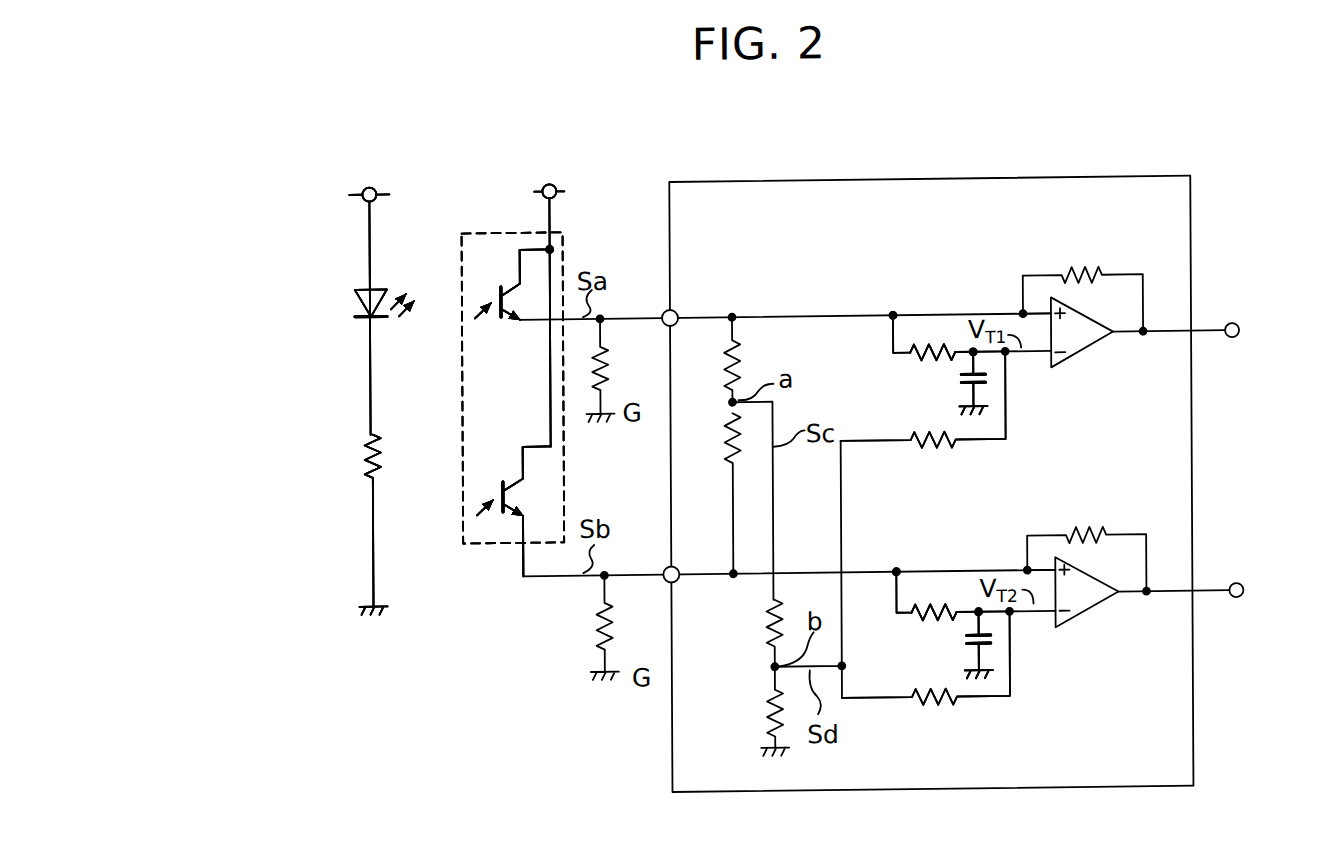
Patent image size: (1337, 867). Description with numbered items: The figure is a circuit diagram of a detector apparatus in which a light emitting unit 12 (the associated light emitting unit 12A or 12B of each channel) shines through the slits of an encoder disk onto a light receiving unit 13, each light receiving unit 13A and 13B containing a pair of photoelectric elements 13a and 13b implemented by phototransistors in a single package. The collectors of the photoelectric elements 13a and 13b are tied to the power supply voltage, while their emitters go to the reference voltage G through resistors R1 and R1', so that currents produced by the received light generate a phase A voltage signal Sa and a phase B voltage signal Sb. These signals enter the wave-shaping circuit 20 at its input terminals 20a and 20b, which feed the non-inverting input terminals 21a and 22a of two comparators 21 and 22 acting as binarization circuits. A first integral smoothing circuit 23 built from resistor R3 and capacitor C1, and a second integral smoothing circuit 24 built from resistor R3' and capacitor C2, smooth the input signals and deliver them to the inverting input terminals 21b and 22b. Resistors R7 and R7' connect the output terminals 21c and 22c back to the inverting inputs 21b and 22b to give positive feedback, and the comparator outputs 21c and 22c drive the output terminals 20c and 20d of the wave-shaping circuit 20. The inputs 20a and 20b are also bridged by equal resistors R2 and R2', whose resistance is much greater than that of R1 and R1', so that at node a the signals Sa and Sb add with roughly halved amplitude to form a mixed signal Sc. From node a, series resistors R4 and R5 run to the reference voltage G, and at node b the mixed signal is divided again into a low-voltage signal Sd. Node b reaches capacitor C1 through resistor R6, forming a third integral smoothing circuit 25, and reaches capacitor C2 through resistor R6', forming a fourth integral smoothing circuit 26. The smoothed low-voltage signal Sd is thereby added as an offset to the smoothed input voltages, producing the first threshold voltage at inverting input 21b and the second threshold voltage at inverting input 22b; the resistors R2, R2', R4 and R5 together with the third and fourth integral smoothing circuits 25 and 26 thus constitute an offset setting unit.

The light emitting unit 12 is at (347, 284).
The light emitting unit 12A is at (293, 392).
The light emitting unit 12B is at (293, 392).
The light receiving unit 13 is at (477, 229).
The light receiving unit 13A is at (508, 351).
The light receiving unit 13B is at (508, 351).
The photoelectric element 13a is at (486, 324).
The photoelectric element 13b is at (486, 479).
The wave-shaping circuit 20 is at (1089, 180).
The input terminal 20a is at (665, 310).
The input terminal 20b is at (666, 568).
The output terminal 20c is at (1240, 336).
The output terminal 20d is at (1243, 597).
The comparator 21 is at (1094, 358).
The non-inverting input terminal 21a is at (1037, 304).
The inverting input terminal 21b is at (1038, 362).
The output terminal 21c is at (1127, 333).
The comparator 22 is at (1096, 619).
The non-inverting input terminal 22a is at (1042, 572).
The inverting input terminal 22b is at (1040, 620).
The output terminal 22c is at (1134, 594).
The first integral smoothing circuit 23 is at (887, 366).
The second integral smoothing circuit 24 is at (893, 628).
The third integral smoothing circuit 25 is at (1010, 367).
The fourth integral smoothing circuit 26 is at (1014, 627).
The resistor R1 is at (623, 368).
The resistor R1' is at (574, 626).
The resistor R2 is at (765, 358).
The resistor R2' is at (712, 481).
The resistor R3 is at (921, 372).
The resistor R3' is at (924, 631).
The resistor R4 is at (761, 627).
The resistor R5 is at (762, 710).
The resistor R6 is at (923, 430).
The resistor R6' is at (926, 689).
The resistor R7 is at (1082, 266).
The resistor R7' is at (1087, 524).
The capacitor C1 is at (956, 386).
The capacitor C2 is at (961, 646).